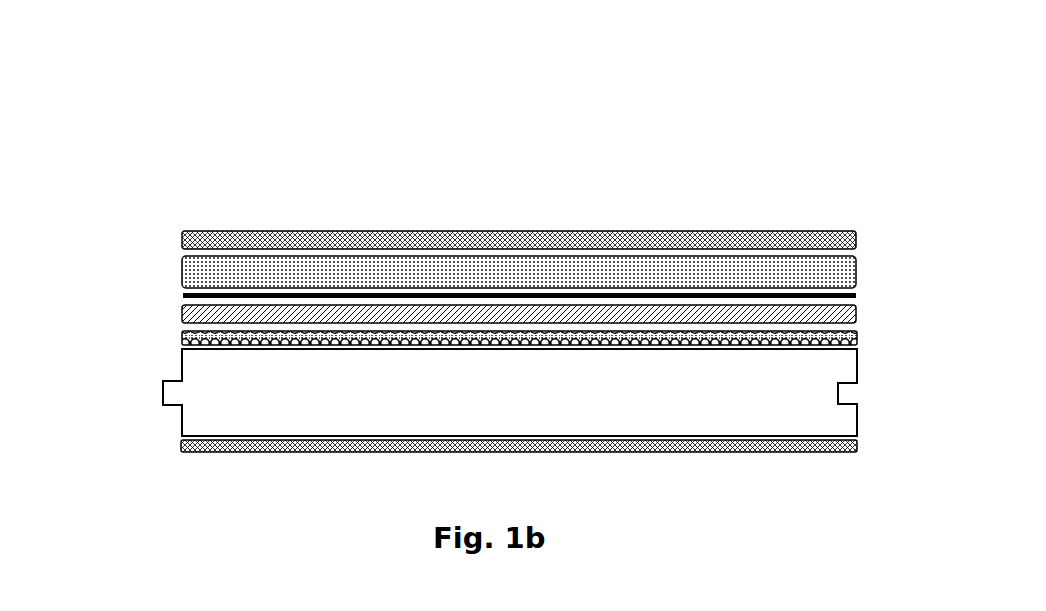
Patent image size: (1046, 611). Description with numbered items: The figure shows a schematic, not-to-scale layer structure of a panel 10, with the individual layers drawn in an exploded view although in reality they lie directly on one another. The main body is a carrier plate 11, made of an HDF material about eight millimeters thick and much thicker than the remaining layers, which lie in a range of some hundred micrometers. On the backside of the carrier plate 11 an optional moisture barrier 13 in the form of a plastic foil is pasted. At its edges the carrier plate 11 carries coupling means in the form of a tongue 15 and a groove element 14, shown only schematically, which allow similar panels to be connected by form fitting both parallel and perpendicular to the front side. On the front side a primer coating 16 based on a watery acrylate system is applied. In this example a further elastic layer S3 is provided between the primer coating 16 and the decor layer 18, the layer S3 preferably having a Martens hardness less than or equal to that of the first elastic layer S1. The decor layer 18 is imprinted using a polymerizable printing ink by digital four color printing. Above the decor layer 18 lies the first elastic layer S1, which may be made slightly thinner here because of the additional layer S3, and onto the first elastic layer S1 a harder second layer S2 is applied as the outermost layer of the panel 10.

The panel 10 is at (320, 192).
The first elastic layer S1 is at (205, 272).
The second layer S2 is at (843, 237).
The further elastic layer S3 is at (847, 311).
The decor layer 18 is at (185, 295).
The carrier plate 11 is at (257, 387).
The groove element 14 is at (172, 400).
The tongue 15 is at (852, 388).
The primer coating 16 is at (853, 335).
The moisture barrier 13 is at (837, 447).